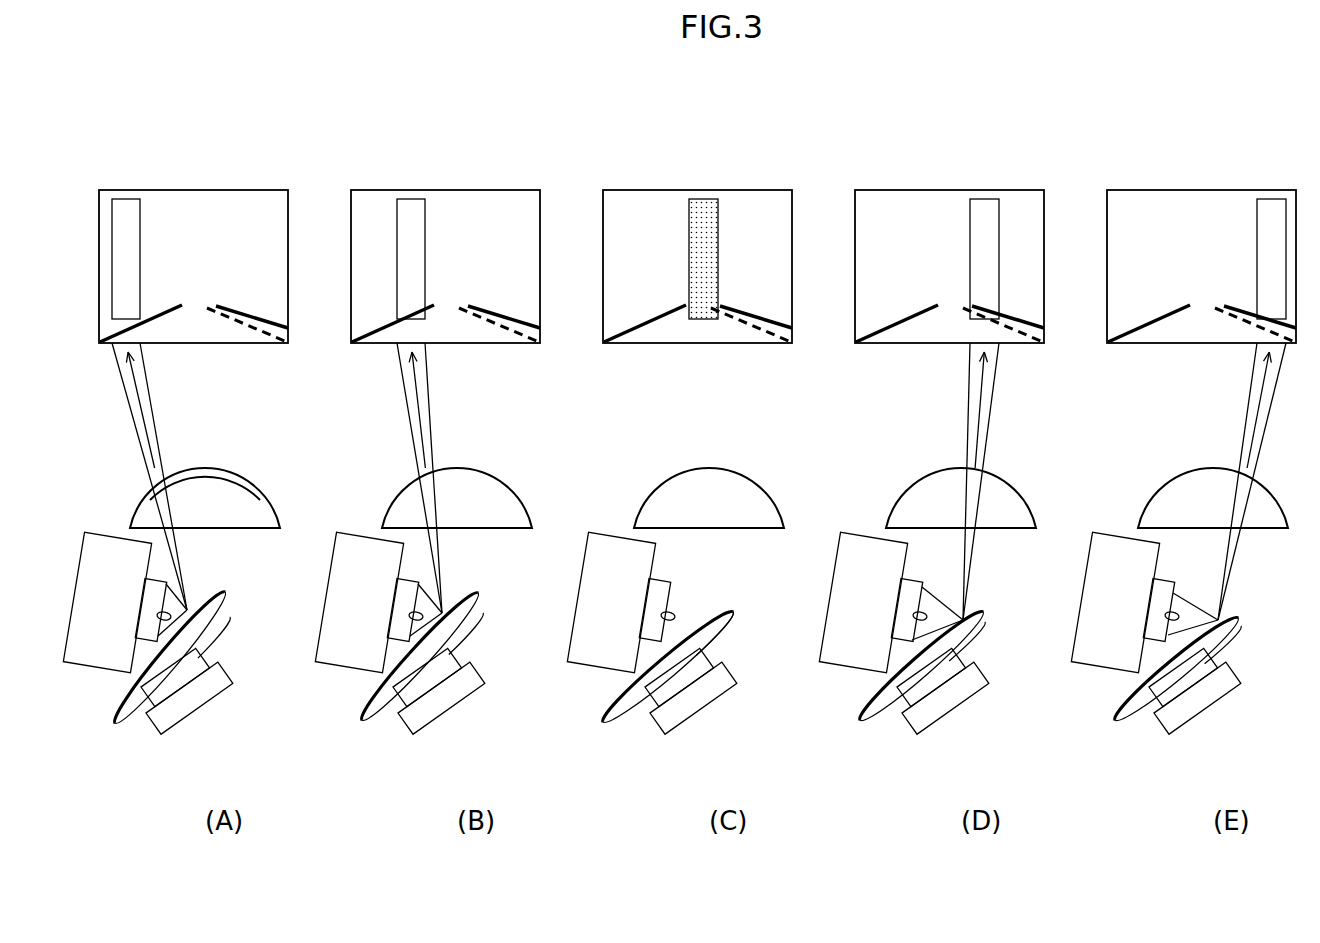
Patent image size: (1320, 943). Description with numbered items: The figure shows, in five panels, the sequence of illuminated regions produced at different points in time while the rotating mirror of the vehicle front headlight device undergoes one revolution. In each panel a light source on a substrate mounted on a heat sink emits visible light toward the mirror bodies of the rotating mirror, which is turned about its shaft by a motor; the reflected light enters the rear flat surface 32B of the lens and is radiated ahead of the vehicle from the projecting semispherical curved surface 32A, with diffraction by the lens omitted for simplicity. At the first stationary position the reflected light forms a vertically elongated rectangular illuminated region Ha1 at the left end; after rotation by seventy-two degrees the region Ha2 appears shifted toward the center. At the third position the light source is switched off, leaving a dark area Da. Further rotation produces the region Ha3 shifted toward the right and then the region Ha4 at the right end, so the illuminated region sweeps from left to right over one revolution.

The curved surface 32A is at (202, 466).
The flat surface 32B is at (232, 530).
The illuminated region Ha1 is at (123, 199).
The illuminated region Ha2 is at (410, 218).
The dark area Da is at (701, 218).
The illuminated region Ha3 is at (966, 218).
The illuminated region Ha4 is at (1270, 218).